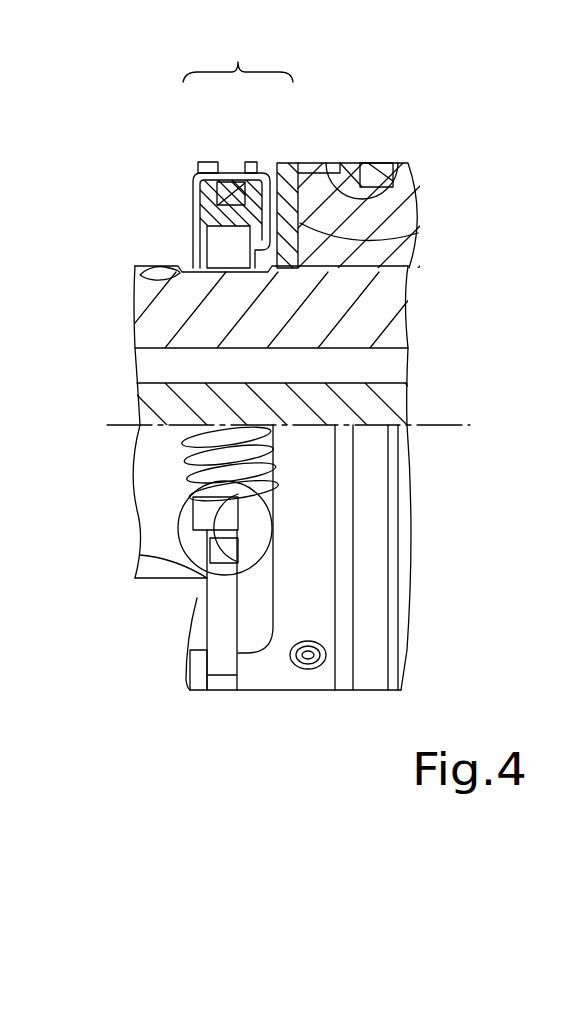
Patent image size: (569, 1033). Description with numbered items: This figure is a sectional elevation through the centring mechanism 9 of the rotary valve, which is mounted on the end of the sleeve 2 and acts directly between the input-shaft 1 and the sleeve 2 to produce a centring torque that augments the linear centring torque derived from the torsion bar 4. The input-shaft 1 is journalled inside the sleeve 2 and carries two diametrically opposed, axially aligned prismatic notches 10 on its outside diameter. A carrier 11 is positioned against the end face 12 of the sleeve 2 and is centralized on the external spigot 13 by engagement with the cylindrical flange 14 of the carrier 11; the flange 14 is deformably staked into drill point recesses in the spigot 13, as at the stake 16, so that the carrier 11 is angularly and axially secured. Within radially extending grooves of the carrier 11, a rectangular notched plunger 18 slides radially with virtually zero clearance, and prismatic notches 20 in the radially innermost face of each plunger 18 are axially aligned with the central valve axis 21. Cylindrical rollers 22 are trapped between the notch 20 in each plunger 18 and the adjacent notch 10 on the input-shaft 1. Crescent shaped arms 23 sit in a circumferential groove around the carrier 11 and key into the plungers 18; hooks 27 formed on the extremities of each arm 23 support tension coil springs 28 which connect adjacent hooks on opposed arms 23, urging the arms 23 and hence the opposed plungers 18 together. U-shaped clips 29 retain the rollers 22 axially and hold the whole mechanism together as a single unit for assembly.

The input-shaft 1 is at (153, 320).
The sleeve 2 is at (415, 172).
The torsion bar 4 is at (150, 403).
The centring mechanism 9 is at (227, 126).
The prismatic notches 10 is at (145, 268).
The carrier 11 is at (283, 165).
The end face 12 is at (417, 235).
The external spigot 13 is at (400, 183).
The cylindrical flange 14 is at (320, 162).
The stake 16 is at (308, 655).
The notched plunger 18 is at (195, 172).
The prismatic notches 20 is at (191, 198).
The central valve axis 21 is at (442, 425).
The cylindrical rollers 22 is at (217, 236).
The crescent shaped arms 23 is at (215, 182).
The hooks 27 is at (140, 555).
The tension coil springs 28 is at (190, 446).
The U-shaped clips 29 is at (255, 168).